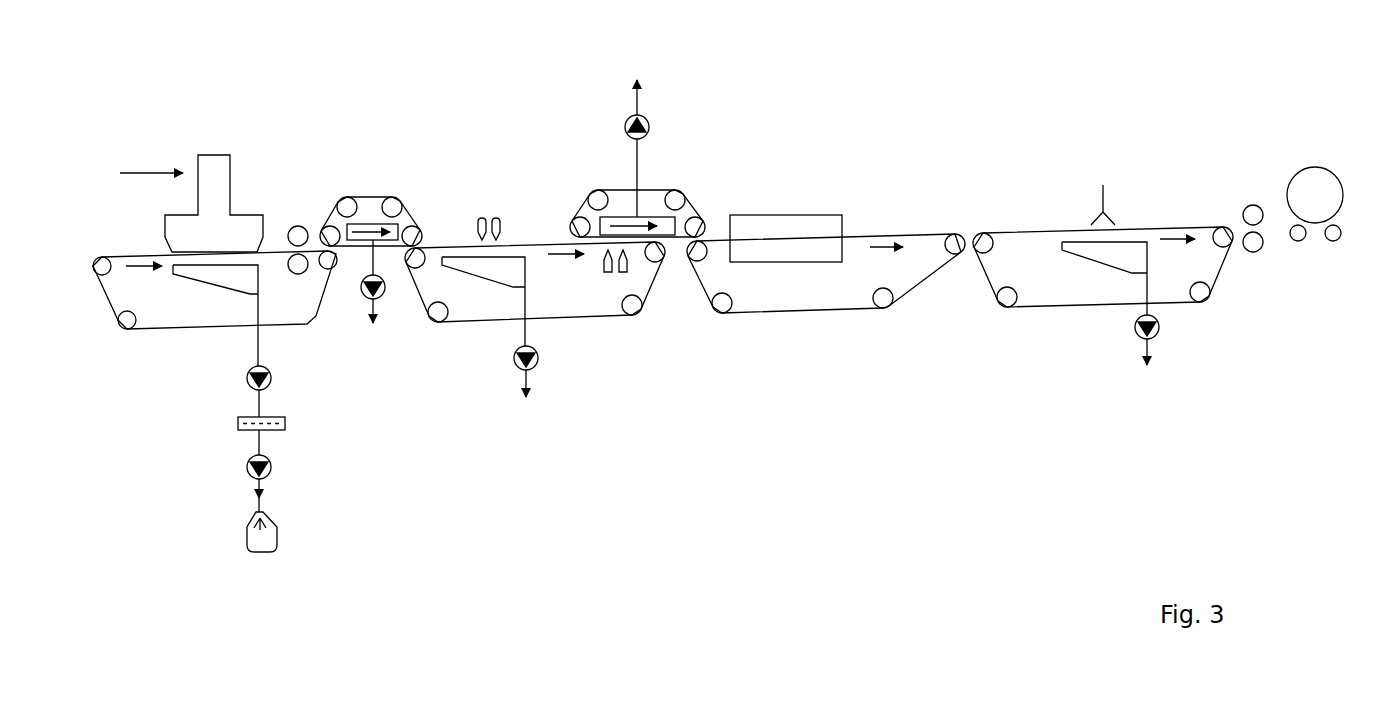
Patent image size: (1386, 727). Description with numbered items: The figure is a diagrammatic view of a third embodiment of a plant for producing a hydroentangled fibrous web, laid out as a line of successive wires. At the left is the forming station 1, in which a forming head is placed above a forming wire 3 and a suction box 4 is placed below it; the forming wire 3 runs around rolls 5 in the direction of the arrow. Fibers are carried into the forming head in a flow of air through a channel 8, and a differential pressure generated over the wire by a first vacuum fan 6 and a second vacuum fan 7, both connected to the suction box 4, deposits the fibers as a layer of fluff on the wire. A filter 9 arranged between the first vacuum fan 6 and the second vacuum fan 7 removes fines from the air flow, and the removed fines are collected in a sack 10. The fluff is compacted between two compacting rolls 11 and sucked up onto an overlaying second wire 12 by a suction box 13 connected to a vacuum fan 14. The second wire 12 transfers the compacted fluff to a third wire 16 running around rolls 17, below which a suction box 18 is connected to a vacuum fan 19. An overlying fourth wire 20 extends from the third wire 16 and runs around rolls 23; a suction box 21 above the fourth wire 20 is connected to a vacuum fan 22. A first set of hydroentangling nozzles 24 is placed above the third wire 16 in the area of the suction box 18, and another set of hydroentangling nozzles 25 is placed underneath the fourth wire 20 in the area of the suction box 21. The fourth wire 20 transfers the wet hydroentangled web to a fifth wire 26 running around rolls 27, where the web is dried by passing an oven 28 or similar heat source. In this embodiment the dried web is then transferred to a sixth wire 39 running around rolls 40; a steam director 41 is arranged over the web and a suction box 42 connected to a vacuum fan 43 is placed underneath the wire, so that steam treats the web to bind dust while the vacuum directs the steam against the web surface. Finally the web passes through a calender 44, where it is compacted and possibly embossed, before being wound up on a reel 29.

The forming station 1 is at (211, 138).
The forming wire 3 is at (123, 255).
The suction box 4 is at (215, 296).
The rolls 5 is at (92, 261).
The first vacuum fan 6 is at (247, 381).
The second vacuum fan 7 is at (250, 470).
The channel 8 is at (137, 172).
The filter 9 is at (238, 427).
The sack 10 is at (250, 547).
The compacting rolls 11 is at (305, 228).
The second wire 12 is at (362, 197).
The suction box 13 is at (405, 225).
The vacuum fan 14 is at (358, 293).
The third wire 16 is at (533, 240).
The rolls 17 is at (640, 317).
The suction box 18 is at (480, 287).
The vacuum fan 19 is at (540, 358).
The fourth wire 20 is at (615, 187).
The suction box 21 is at (650, 213).
The vacuum fan 22 is at (652, 113).
The rolls 23 is at (708, 225).
The first set of hydroentangling nozzles 24 is at (472, 222).
The second set of hydroentangling nozzles 25 is at (622, 277).
The fifth wire 26 is at (887, 233).
The rolls 27 is at (893, 308).
The oven 28 is at (758, 213).
The reel 29 is at (1318, 165).
The sixth wire 39 is at (1020, 232).
The rolls 40 is at (1003, 307).
The steam director 41 is at (1108, 205).
The suction box 42 is at (1088, 260).
The vacuum fan 43 is at (1160, 325).
The calender 44 is at (1252, 202).